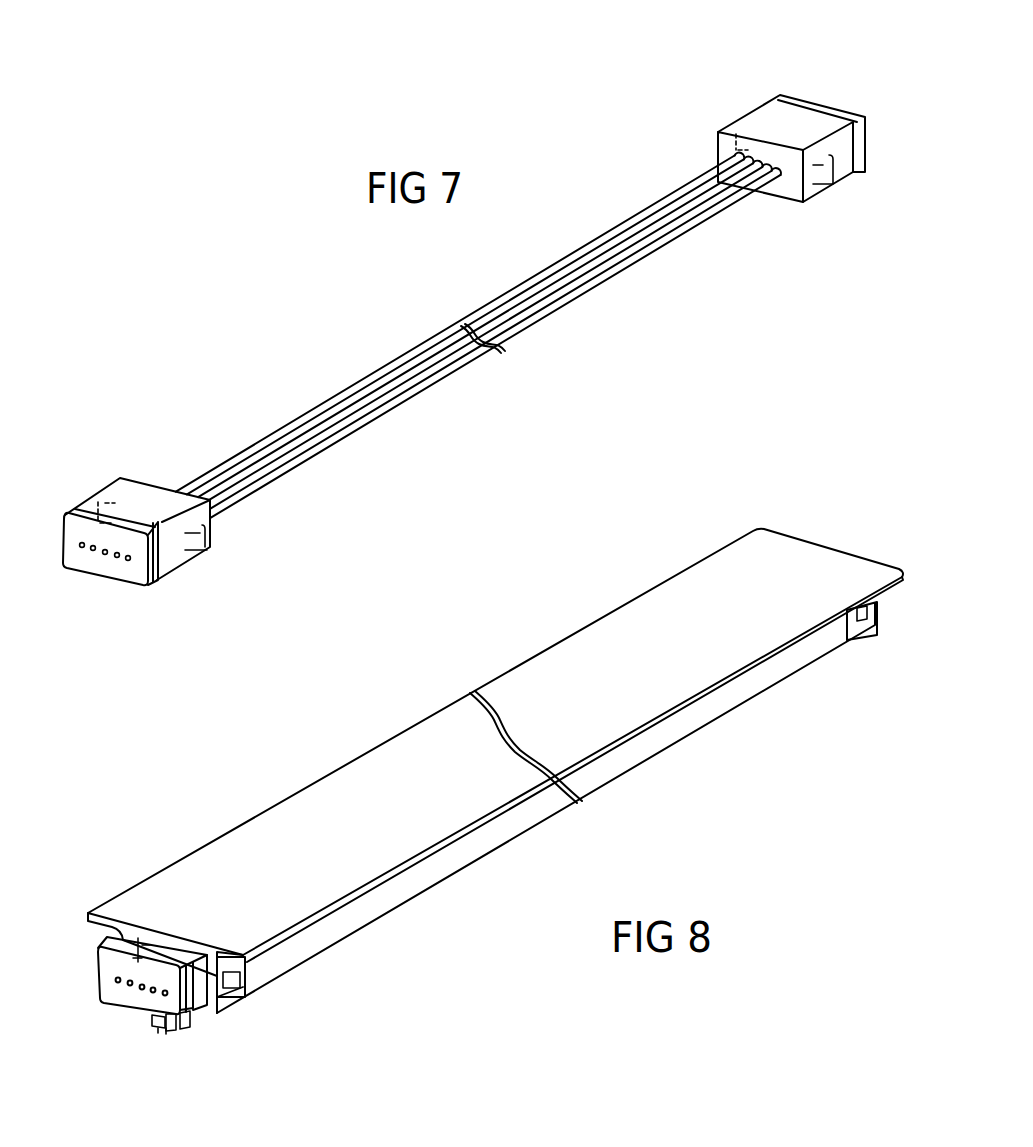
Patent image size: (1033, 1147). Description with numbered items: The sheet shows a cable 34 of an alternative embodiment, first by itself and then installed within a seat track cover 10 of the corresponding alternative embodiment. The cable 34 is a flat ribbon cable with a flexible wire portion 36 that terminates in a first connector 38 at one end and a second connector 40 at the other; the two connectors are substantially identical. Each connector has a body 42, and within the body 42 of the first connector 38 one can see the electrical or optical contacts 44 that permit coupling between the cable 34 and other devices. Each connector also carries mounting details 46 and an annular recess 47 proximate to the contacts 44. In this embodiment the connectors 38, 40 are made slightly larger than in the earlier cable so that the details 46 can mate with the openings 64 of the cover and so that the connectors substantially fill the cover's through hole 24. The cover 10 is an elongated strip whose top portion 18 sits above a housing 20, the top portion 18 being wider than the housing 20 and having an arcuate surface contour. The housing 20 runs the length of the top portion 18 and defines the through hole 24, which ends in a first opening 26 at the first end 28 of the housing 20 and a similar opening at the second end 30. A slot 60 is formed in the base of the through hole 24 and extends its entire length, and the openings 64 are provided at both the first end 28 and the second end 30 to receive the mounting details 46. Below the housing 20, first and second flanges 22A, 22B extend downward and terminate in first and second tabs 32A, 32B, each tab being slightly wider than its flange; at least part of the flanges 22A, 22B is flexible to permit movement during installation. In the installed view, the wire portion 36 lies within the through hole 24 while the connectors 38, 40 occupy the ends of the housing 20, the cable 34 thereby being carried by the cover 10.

In FIG. 7, the cable 34 is at (437, 327).
In FIG. 7, the wire portion 36 is at (528, 333).
In FIG. 7, the first connector 38 is at (135, 482).
In FIG. 7, the second connector 40 is at (760, 108).
In FIG. 7, the body 42 is at (816, 120).
In FIG. 7, the electrical/optical contacts 44 is at (126, 562).
In FIG. 7, the mounting details 46 is at (728, 133).
In FIG. 7, the annular recesses 47 is at (865, 168).
In FIG. 8, the seat track cover 10 is at (495, 633).
In FIG. 8, the top portion 18 is at (216, 893).
In FIG. 8, the housing 20 is at (540, 812).
In FIG. 8, the through hole 24 is at (233, 992).
In FIG. 8, the first opening 26 is at (160, 940).
In FIG. 8, the first end 28 is at (222, 999).
In FIG. 8, the second end 30 is at (877, 615).
In FIG. 8, the first tab 32A is at (147, 1020).
In FIG. 8, the second tab 32B is at (181, 1030).
In FIG. 8, the first flange 22A is at (163, 1029).
In FIG. 8, the second flange 22B is at (168, 1034).
In FIG. 8, the slot 60 is at (172, 1031).
In FIG. 8, the openings 64 is at (862, 620).